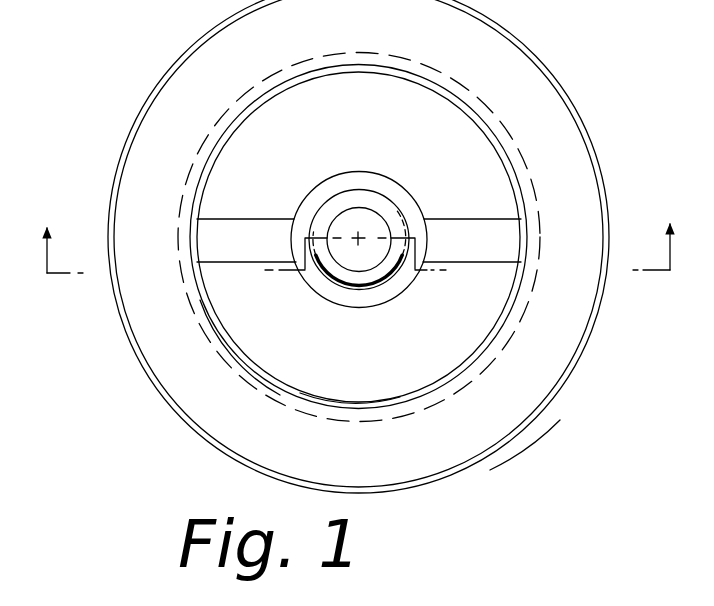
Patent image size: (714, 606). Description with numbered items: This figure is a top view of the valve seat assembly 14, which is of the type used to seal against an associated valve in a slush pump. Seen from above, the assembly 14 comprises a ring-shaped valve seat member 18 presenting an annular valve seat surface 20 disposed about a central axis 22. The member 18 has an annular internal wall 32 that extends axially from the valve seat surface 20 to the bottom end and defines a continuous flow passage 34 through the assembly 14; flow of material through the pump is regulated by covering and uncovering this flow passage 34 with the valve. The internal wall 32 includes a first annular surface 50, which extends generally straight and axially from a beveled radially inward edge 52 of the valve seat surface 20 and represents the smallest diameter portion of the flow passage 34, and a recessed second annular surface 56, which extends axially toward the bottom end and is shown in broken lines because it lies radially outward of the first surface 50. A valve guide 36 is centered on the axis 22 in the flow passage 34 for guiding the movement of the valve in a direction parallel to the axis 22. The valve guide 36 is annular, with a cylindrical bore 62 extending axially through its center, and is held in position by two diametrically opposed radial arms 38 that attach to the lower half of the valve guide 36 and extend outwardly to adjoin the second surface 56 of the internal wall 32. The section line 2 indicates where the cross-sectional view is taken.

The section line 2- 2 is at (364, 233).
The valve seat assembly 14 is at (555, 58).
The valve seat member 18 is at (564, 391).
The valve seat surface 20 is at (470, 447).
The central axis 22 is at (360, 240).
The internal wall 32 is at (281, 375).
The flow passage 34 is at (272, 93).
The valve guide 36 is at (338, 172).
The radial arms 38 is at (235, 233).
The first annular surface 50 is at (260, 367).
The radially inward edge 52 is at (340, 400).
The second annular surface 56 is at (430, 401).
The cylindrical bore 62 is at (373, 212).